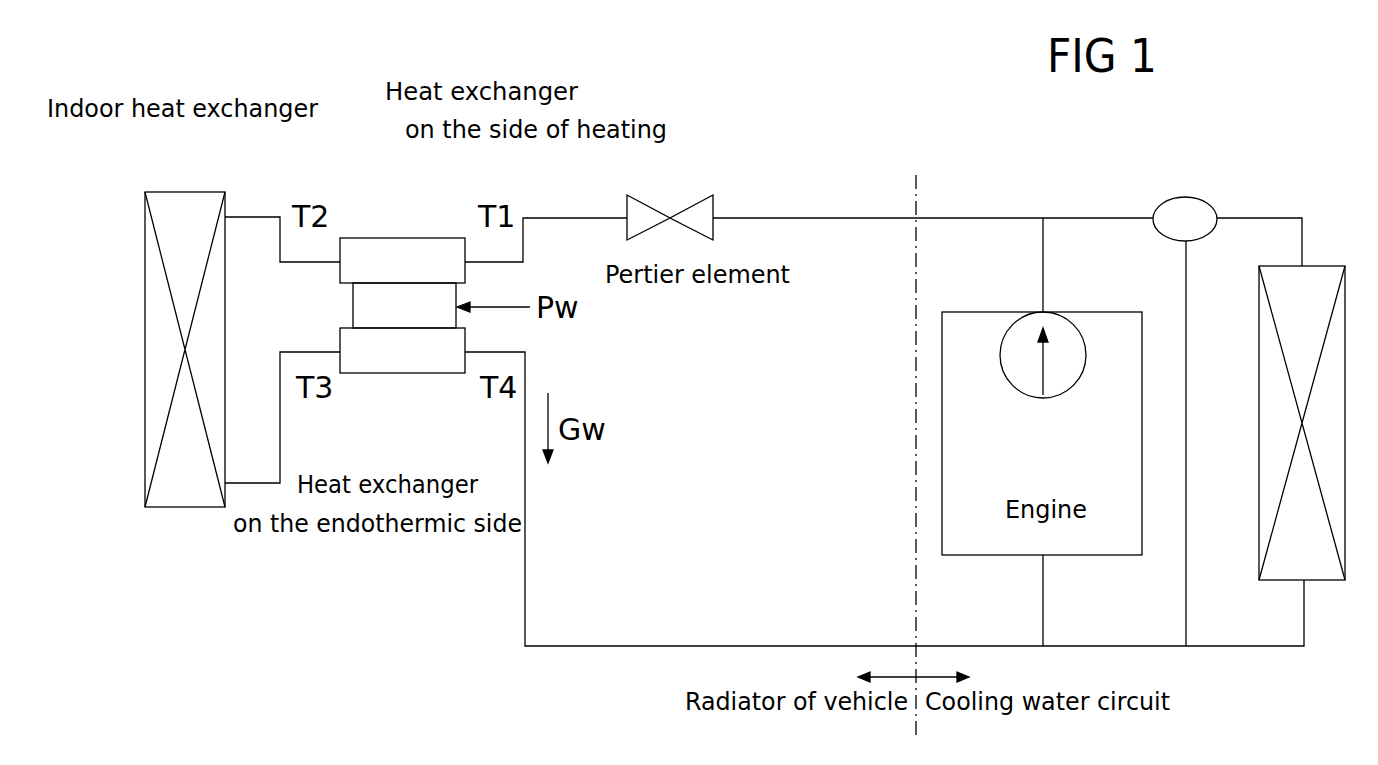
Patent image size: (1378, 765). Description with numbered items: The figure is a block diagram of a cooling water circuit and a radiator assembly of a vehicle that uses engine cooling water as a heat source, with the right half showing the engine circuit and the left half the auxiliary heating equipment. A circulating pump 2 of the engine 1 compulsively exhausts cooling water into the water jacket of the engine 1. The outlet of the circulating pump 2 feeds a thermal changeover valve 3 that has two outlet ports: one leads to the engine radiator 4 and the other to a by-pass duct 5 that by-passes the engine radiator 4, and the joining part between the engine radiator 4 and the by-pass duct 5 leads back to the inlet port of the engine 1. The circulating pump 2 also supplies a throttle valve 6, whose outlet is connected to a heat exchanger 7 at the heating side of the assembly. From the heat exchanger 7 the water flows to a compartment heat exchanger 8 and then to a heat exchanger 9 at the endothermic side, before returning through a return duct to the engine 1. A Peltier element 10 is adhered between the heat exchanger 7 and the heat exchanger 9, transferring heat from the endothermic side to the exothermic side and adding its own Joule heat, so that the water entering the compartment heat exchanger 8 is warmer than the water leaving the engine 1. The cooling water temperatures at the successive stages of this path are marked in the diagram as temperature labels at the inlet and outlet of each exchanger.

The engine 1 is at (974, 345).
The circulating pump 2 is at (1062, 342).
The thermal changeover valve 3 is at (1192, 212).
The engine radiator 4 is at (1318, 266).
The by-pass duct 5 is at (1186, 617).
The throttle valve 6 is at (655, 208).
The heat exchanger at the heating side 7 is at (410, 238).
The compartment heat exchanger 8 is at (180, 192).
The heat exchanger at the endothermic side 9 is at (408, 373).
The Peltier element 10 is at (456, 295).